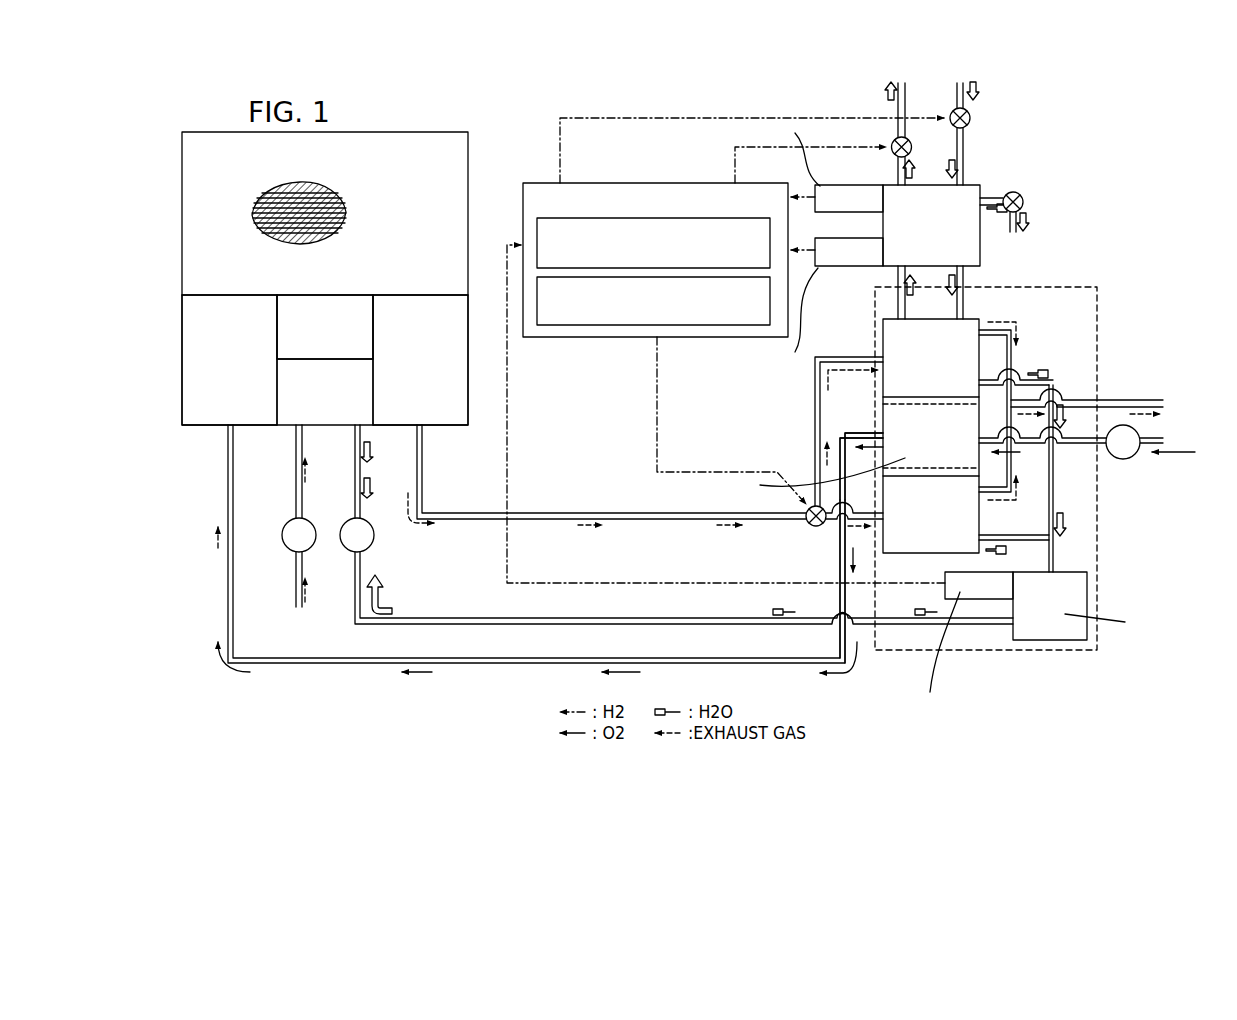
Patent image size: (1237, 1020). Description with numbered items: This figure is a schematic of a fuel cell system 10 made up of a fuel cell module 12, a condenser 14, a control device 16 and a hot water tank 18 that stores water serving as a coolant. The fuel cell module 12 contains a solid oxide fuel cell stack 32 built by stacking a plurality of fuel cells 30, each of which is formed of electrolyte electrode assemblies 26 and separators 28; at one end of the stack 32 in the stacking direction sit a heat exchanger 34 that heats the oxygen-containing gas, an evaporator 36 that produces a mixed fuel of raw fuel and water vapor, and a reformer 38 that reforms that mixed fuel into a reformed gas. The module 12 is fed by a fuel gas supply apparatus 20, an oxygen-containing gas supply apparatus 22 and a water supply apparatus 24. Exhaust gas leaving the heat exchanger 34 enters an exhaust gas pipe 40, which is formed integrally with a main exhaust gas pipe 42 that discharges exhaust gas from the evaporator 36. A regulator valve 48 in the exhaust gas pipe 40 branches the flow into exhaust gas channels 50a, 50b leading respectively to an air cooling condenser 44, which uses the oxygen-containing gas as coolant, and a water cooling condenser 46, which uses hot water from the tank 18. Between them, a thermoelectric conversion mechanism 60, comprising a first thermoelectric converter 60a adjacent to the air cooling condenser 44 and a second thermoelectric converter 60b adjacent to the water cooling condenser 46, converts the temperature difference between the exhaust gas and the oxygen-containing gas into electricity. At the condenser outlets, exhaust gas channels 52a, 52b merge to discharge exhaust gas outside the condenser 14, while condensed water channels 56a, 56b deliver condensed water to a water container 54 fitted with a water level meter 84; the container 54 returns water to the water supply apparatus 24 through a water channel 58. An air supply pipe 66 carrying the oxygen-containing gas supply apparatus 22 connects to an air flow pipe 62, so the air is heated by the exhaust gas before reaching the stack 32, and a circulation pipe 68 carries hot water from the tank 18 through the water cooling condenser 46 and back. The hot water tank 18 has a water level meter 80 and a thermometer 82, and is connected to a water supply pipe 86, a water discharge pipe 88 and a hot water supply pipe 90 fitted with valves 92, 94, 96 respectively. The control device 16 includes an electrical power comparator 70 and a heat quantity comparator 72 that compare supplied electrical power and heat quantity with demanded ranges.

The fuel cell system 10 is at (547, 121).
The fuel cell module 12 is at (422, 130).
The condenser 14 is at (1101, 300).
The control device 16 is at (657, 183).
The hot water tank 18 is at (925, 185).
The fuel gas supply apparatus 20 is at (310, 525).
The oxygen-containing gas supply apparatus 22 is at (1123, 459).
The water supply apparatus 24 is at (370, 525).
The electrolyte electrode assembly 26 is at (343, 206).
The separator 28 is at (336, 197).
The solid oxide fuel cell 30 is at (402, 182).
The solid oxide fuel cell stack 32 is at (447, 177).
The heat exchanger 34 is at (426, 427).
The evaporator 36 is at (322, 427).
The reformer 38 is at (335, 294).
The exhaust gas pipe 40 is at (447, 523).
The main exhaust gas pipe 42 is at (611, 499).
The air cooling condenser 44 is at (979, 510).
The water cooling condenser 46 is at (924, 318).
The regulator valve 48 is at (806, 522).
The exhaust gas channel 50a is at (835, 526).
The exhaust gas channel 50b is at (815, 380).
The exhaust gas channel 52a is at (1013, 460).
The exhaust gas channel 52b is at (1012, 358).
The water container 54 is at (1090, 580).
The condensed water channel 56a is at (1040, 551).
The condensed water channel 56b is at (1053, 377).
The water channel 58 is at (775, 624).
The thermoelectric conversion mechanism 60 is at (760, 400).
The first thermoelectric converter 60a is at (881, 467).
The second thermoelectric converter 60b is at (881, 404).
The air flow pipe 62 is at (883, 421).
The air supply pipe 66 is at (795, 664).
The circulation pipe 68 is at (898, 305).
The electrical power comparator 70 is at (537, 233).
The heat quantity comparator 72 is at (562, 325).
The water level meter 80 is at (835, 185).
The thermometer 82 is at (838, 266).
The water level meter 84 is at (972, 600).
The water supply pipe 86 is at (963, 150).
The water discharge pipe 88 is at (893, 141).
The hot water supply pipe 90 is at (990, 200).
The valve 92 is at (970, 118).
The valve 94 is at (912, 140).
The valve 96 is at (1023, 200).